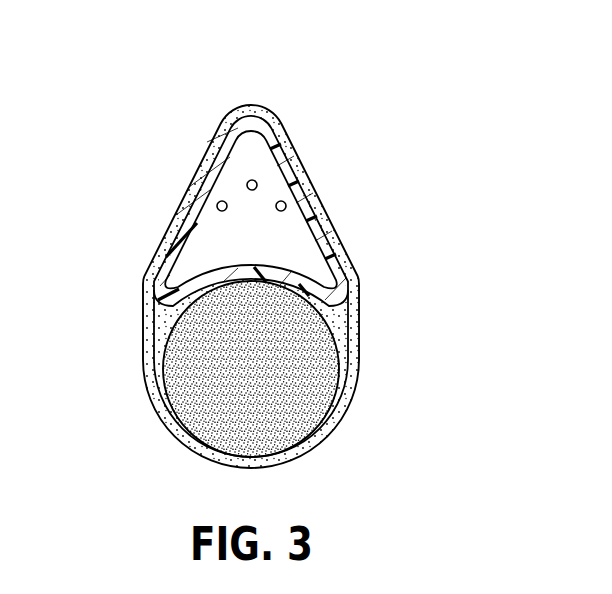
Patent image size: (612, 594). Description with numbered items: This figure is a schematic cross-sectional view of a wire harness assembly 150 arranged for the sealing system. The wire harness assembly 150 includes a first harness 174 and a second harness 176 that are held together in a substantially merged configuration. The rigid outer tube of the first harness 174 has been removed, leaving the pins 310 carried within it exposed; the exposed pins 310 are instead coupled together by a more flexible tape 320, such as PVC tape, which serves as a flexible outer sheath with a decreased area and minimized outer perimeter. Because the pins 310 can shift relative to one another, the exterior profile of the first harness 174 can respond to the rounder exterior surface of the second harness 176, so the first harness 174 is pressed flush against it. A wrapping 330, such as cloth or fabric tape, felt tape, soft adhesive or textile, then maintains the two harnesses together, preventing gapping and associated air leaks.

The wire harness assembly 150 is at (297, 93).
The first wire harness 174 is at (160, 177).
The second wire harness 176 is at (243, 420).
The pins 310 is at (251, 179).
The tape 320 is at (310, 208).
The wrapping 330 is at (355, 322).